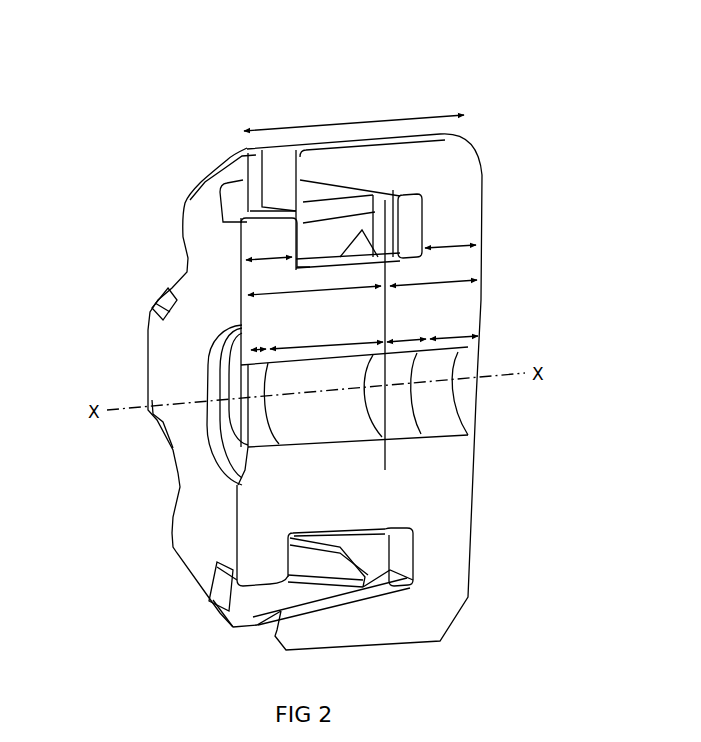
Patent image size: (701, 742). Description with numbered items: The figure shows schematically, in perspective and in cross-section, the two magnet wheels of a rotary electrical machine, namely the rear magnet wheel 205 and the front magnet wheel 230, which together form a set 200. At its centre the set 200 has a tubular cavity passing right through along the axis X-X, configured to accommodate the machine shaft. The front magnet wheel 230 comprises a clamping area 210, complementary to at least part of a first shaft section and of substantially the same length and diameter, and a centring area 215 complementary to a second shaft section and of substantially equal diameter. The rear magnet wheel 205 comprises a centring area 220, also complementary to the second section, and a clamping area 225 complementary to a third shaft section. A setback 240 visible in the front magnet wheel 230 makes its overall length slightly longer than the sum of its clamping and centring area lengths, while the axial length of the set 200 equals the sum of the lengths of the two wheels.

The set 200 is at (383, 81).
The rear magnet wheel 205 is at (482, 200).
The clamping area 210 is at (247, 403).
The centring area 215 is at (355, 420).
The centring area 220 is at (398, 405).
The clamping area 225 is at (455, 360).
The front magnet wheel 230 is at (176, 547).
The setback 240 is at (238, 358).